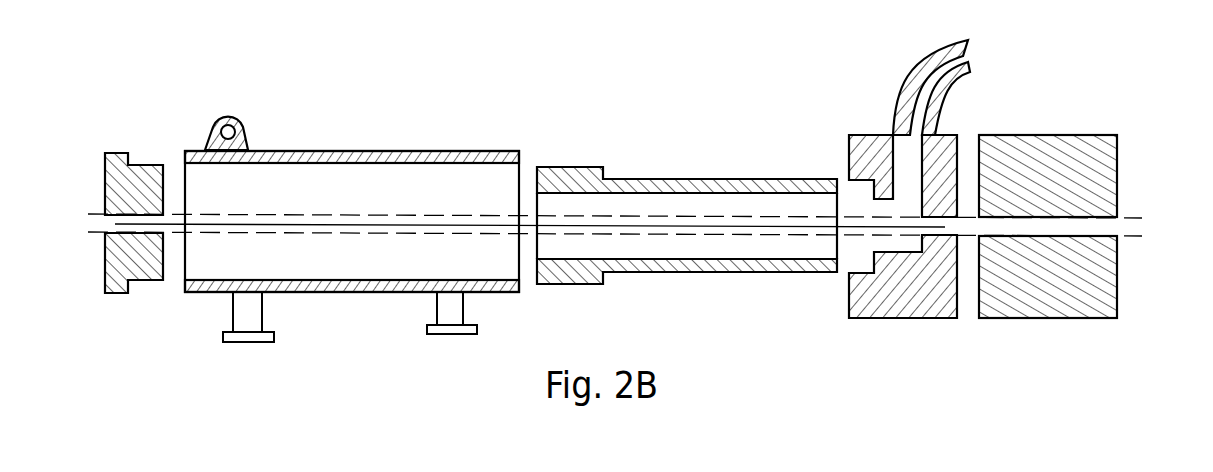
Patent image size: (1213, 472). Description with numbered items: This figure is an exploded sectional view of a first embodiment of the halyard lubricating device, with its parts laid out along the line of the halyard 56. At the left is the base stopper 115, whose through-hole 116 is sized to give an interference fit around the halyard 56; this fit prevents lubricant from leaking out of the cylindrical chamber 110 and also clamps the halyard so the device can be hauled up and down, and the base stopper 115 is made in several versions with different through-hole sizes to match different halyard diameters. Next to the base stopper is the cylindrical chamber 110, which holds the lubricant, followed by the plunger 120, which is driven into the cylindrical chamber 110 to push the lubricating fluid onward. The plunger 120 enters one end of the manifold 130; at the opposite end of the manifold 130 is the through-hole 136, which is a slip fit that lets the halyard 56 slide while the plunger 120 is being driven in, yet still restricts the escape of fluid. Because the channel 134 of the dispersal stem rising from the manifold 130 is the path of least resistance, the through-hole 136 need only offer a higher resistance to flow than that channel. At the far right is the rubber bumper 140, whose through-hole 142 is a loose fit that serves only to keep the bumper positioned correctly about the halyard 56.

The halyard 56 is at (710, 232).
The cylindrical chamber 110 is at (320, 153).
The base stopper 115 is at (140, 183).
The through-hole 116 is at (127, 237).
The plunger 120 is at (575, 178).
The manifold 130 is at (865, 148).
The channel 134 is at (961, 59).
The through-hole 136 is at (938, 227).
The rubber bumper 140 is at (1065, 157).
The through-hole 142 is at (1027, 230).